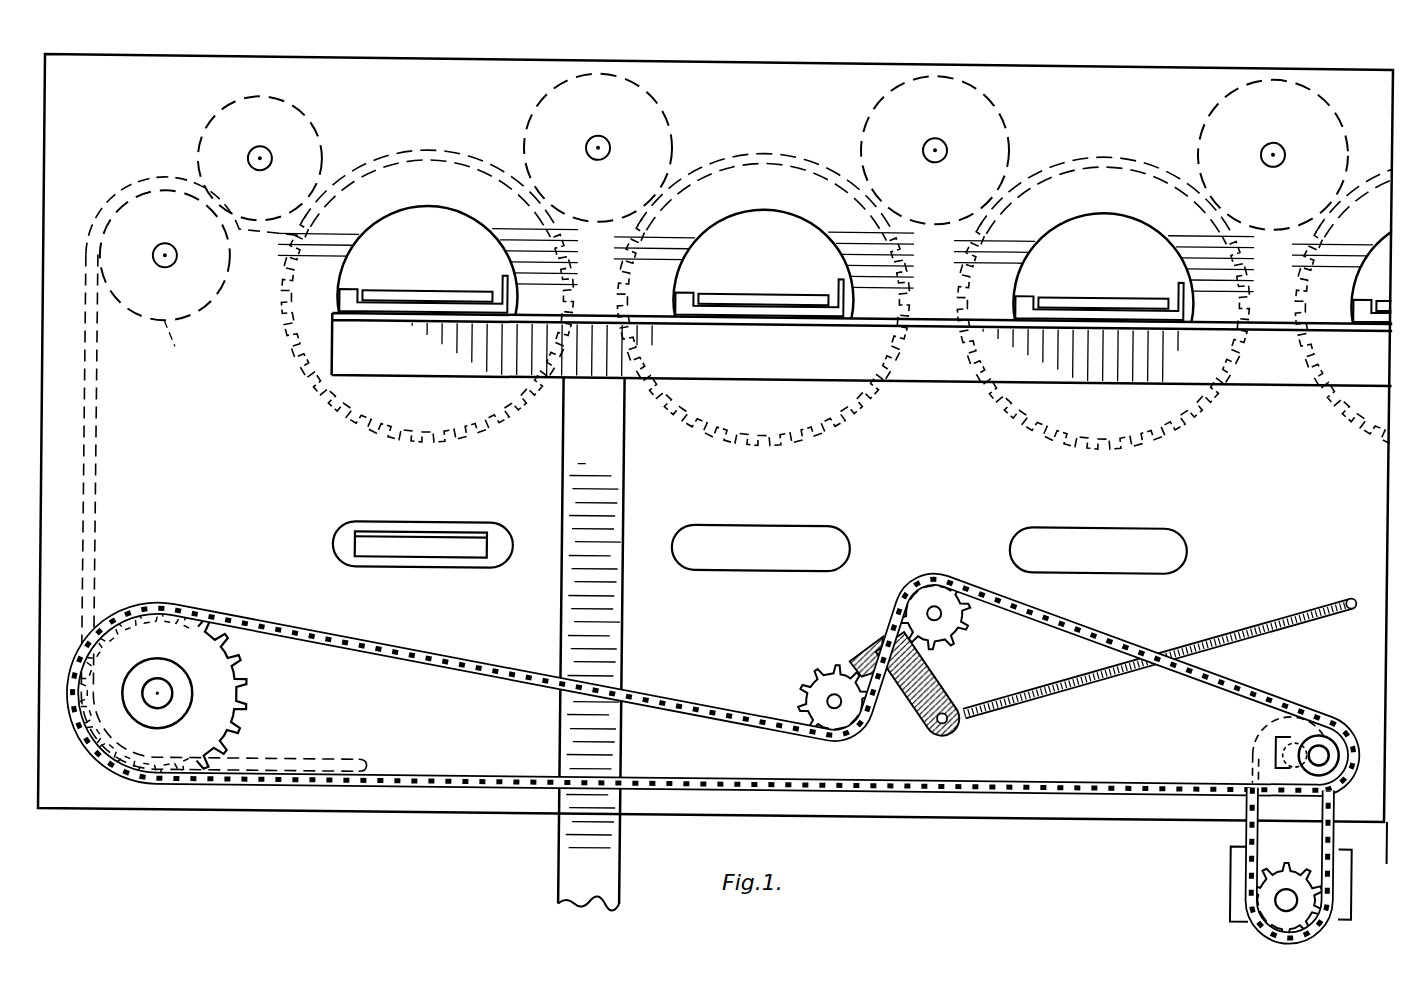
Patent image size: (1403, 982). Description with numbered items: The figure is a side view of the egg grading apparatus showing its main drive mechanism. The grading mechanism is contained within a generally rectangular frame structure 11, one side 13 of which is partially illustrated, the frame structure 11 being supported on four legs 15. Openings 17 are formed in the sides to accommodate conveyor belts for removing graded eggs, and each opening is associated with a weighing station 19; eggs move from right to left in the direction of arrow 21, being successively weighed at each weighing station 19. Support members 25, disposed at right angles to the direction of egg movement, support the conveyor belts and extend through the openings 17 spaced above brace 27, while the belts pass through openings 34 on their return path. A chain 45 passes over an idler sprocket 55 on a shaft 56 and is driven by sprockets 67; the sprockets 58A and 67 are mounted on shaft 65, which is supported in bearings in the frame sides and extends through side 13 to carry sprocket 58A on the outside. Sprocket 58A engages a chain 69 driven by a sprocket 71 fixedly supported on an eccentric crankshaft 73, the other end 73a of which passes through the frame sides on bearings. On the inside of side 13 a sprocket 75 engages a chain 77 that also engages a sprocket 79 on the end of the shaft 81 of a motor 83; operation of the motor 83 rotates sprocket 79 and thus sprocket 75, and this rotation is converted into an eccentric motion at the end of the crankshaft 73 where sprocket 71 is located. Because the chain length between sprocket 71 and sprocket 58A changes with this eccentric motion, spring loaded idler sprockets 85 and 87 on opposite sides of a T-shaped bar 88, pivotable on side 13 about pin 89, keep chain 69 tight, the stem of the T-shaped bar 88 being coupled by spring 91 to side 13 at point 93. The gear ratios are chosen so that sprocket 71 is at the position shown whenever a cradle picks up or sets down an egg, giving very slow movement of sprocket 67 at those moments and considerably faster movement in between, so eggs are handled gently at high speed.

The frame structure 11 is at (1222, 38).
The side 13 is at (834, 475).
The legs 15 is at (628, 846).
The openings 17 is at (1143, 232).
The weighing station 19 is at (441, 247).
The arrow 21 is at (760, 108).
The support members 25 is at (372, 290).
The brace 27 is at (1262, 369).
The openings 34 is at (483, 563).
The chain 45 is at (104, 492).
The idler sprocket 55 is at (189, 347).
The shaft 56 is at (164, 255).
The sprocket 58A is at (256, 636).
The shaft 65 is at (177, 697).
The sprockets 67 is at (256, 668).
The chain 69 is at (418, 784).
The sprocket 71 is at (1339, 729).
The eccentric crankshaft 73 is at (1344, 750).
The other end of the eccentric crankshaft 73a is at (1283, 740).
The sprocket 75 is at (1299, 690).
The chain 77 is at (1254, 812).
The sprocket 79 is at (1262, 877).
The shaft 81 is at (1290, 890).
The motor 83 is at (1374, 832).
The idler sprocket 85 is at (814, 673).
The idler sprocket 87 is at (945, 592).
The T-shaped bar 88 is at (928, 688).
The pin 89 is at (868, 650).
The spring 91 is at (1245, 619).
The point 93 is at (1357, 584).